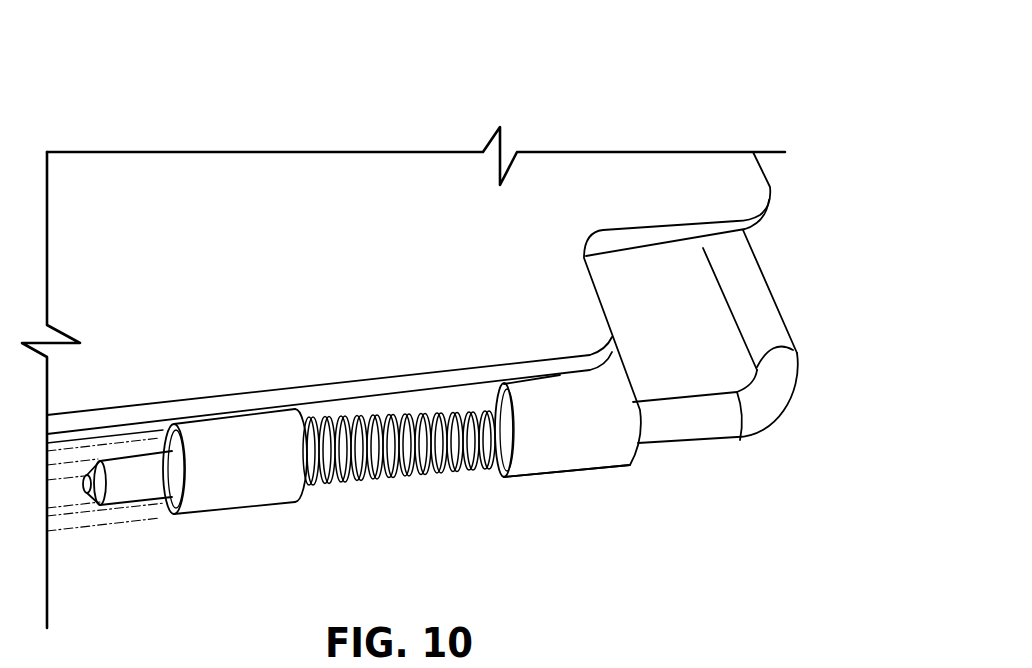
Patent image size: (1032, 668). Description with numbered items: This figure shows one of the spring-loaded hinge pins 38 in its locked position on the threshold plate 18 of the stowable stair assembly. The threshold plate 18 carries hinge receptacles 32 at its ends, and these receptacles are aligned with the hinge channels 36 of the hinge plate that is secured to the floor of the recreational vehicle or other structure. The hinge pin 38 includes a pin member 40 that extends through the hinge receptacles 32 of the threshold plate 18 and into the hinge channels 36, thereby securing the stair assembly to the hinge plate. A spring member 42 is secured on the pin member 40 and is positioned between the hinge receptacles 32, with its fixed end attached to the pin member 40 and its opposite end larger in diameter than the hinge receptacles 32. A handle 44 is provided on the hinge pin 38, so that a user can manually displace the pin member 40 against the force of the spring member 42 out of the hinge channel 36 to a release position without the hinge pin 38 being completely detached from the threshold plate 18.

The threshold plate 18 is at (553, 182).
The hinge receptacles 32 is at (227, 483).
The hinge channels 36 is at (82, 517).
The spring-loaded hinge pin 38 is at (761, 370).
The pin member 40 is at (683, 413).
The spring member 42 is at (463, 470).
The handle 44 is at (762, 308).